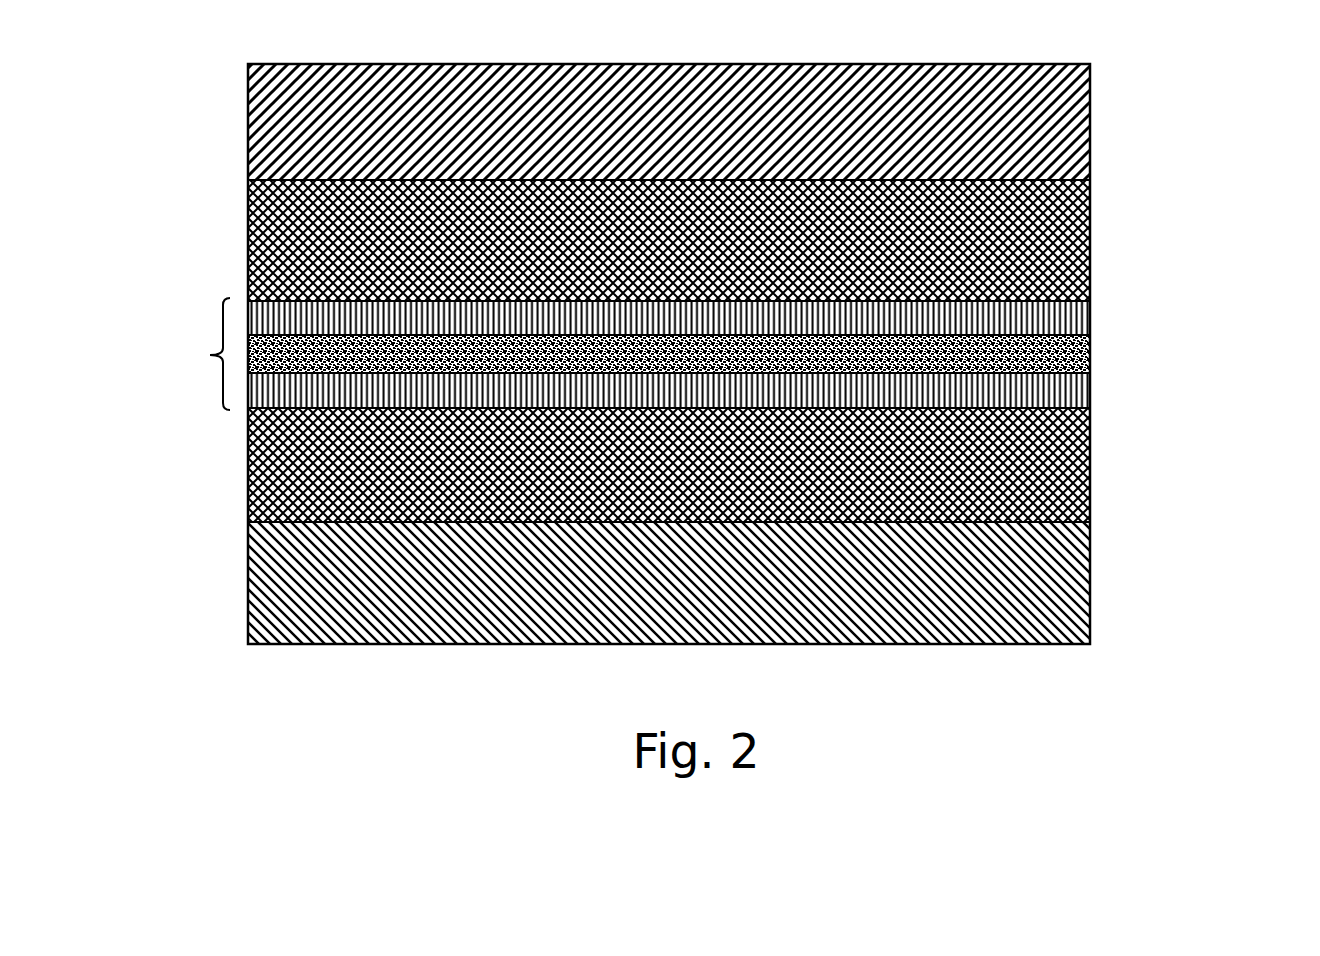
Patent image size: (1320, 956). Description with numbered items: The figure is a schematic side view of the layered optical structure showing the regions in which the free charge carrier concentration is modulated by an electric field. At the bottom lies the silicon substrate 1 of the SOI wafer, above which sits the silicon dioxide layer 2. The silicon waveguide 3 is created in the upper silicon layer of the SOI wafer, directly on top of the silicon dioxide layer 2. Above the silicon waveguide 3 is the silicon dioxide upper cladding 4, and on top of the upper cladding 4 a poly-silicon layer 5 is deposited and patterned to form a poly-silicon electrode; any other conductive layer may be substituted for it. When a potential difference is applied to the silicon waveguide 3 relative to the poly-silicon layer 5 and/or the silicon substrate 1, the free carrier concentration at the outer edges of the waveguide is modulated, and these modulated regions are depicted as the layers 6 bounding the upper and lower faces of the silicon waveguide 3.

The silicon substrate 1 is at (238, 600).
The silicon dioxide layer 2 is at (238, 507).
The silicon waveguide 3 is at (203, 365).
The silicon dioxide upper cladding 4 is at (238, 243).
The poly-silicon layer 5 is at (238, 125).
The regions of modulated free carrier concentration 6 is at (1080, 388).